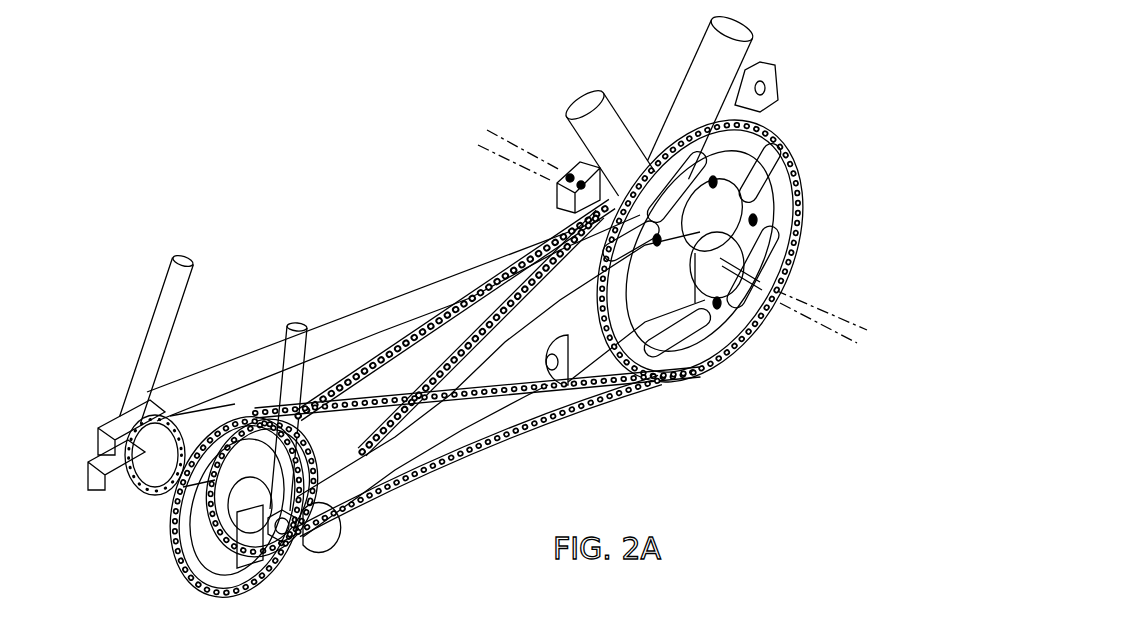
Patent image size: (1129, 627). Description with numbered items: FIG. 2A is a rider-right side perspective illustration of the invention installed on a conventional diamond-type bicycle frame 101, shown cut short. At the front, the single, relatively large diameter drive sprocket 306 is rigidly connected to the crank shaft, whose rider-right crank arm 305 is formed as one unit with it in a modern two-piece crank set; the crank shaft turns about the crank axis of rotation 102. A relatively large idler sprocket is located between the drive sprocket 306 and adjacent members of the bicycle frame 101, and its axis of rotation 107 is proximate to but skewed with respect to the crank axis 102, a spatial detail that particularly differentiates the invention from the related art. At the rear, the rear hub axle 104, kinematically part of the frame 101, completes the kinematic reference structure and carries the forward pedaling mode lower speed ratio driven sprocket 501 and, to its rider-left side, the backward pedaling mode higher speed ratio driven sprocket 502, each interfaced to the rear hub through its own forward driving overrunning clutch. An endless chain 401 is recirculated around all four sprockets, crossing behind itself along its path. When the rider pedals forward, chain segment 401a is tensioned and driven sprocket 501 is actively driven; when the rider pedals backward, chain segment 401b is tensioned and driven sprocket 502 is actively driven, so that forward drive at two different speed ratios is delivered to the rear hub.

The bicycle frame 101 is at (612, 120).
The axis of rotation of the crank shaft 102 is at (502, 133).
The axis of rotation of the idler sprocket 107 is at (490, 153).
The rear hub axle 104 is at (290, 547).
The rider-right crank arm 305 is at (588, 343).
The drive sprocket 306 is at (727, 323).
The endless chain 401 is at (508, 437).
The chain segment 401a is at (372, 365).
The chain segment 401b is at (357, 415).
The forward pedaling mode lower speed ratio driven sprocket 501 is at (173, 510).
The backward pedaling mode higher speed ratio driven sprocket 502 is at (173, 560).